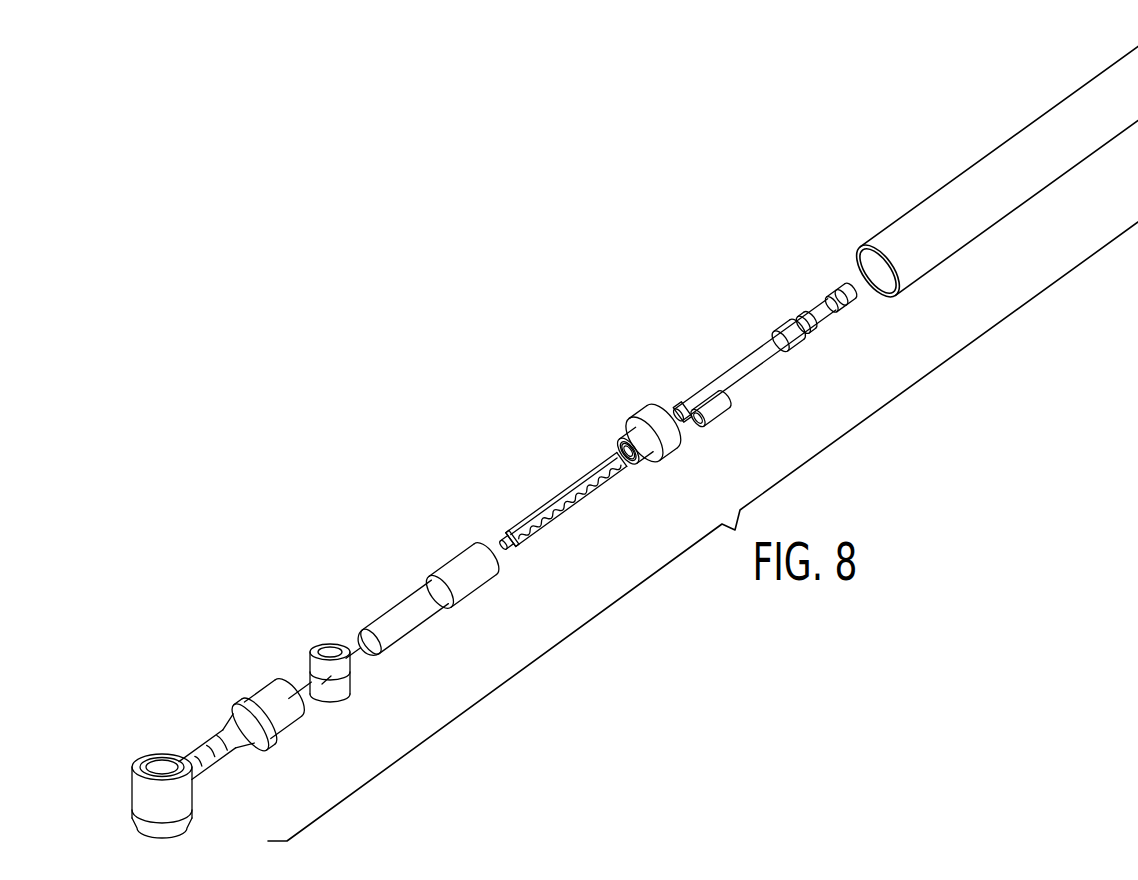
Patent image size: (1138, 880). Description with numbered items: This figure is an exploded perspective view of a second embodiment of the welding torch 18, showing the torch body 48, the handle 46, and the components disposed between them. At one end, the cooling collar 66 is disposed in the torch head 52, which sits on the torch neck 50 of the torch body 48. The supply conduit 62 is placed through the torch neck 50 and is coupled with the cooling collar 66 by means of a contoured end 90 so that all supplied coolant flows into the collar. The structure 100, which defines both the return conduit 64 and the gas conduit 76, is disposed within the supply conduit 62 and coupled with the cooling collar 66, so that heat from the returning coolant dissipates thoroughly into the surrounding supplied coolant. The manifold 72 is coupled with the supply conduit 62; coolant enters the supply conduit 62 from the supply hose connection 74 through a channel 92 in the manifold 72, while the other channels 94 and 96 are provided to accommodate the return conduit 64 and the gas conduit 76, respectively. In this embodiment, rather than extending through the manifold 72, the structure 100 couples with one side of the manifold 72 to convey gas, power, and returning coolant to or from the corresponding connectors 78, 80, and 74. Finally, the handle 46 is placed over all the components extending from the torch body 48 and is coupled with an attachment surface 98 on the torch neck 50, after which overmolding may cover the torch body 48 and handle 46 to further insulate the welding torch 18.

The welding torch 18 is at (476, 330).
The handle 46 is at (935, 256).
The torch body 48 is at (176, 710).
The torch neck 50 is at (228, 766).
The torch head 52 is at (138, 795).
The supply conduit 62 is at (407, 600).
The return conduit 64 is at (513, 555).
The cooling collar 66 is at (316, 647).
The manifold 72 is at (655, 420).
The supply hose connection 74 is at (816, 300).
The gas conduit 76 is at (502, 543).
The connector 78 is at (776, 328).
The connector 80 is at (723, 413).
The contoured end 90 is at (384, 655).
The channel 92 is at (618, 447).
The channel 94 is at (630, 470).
The channel 96 is at (670, 460).
The attachment surface 98 is at (268, 700).
The structure 100 is at (566, 492).